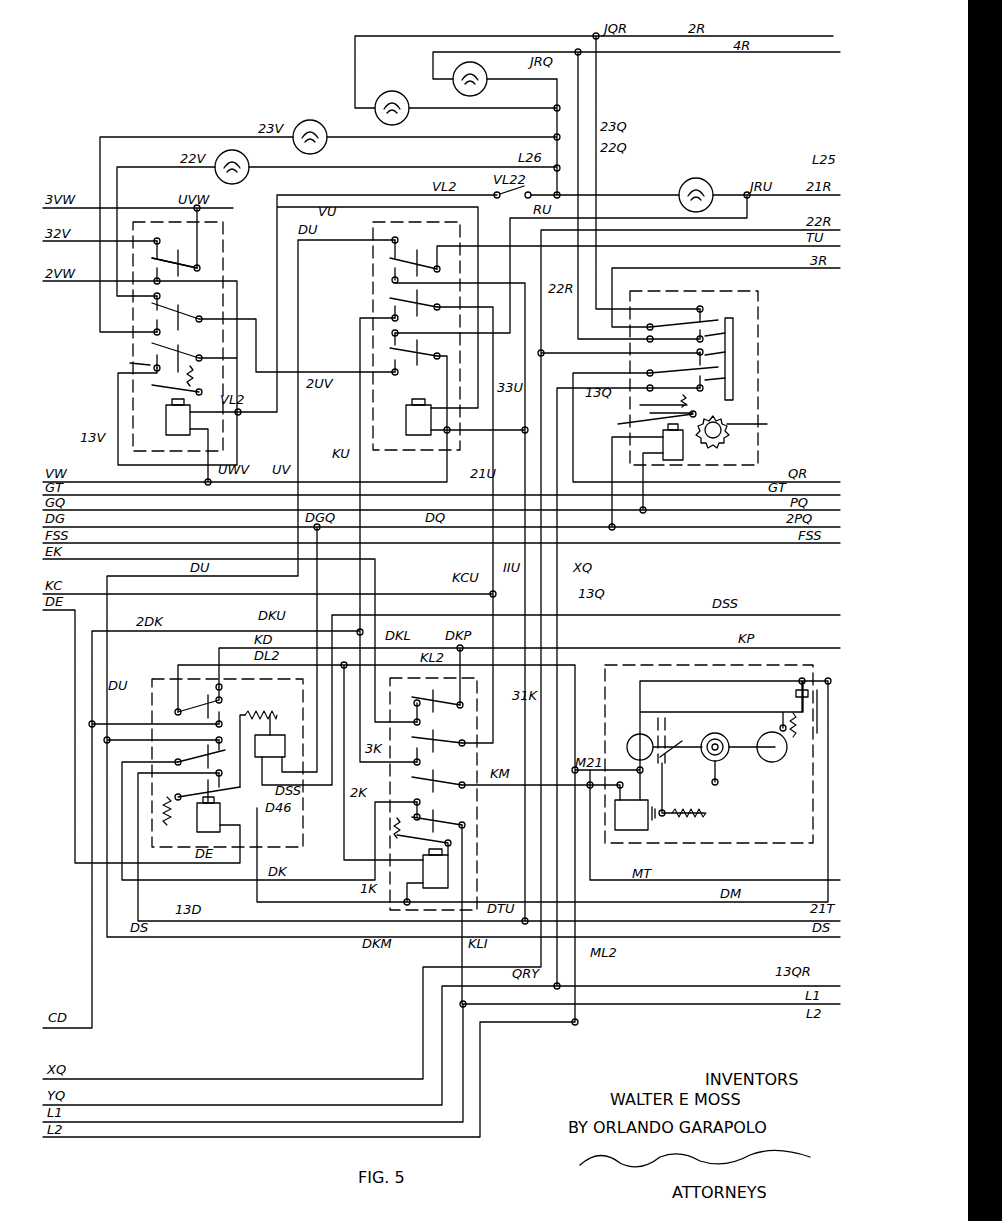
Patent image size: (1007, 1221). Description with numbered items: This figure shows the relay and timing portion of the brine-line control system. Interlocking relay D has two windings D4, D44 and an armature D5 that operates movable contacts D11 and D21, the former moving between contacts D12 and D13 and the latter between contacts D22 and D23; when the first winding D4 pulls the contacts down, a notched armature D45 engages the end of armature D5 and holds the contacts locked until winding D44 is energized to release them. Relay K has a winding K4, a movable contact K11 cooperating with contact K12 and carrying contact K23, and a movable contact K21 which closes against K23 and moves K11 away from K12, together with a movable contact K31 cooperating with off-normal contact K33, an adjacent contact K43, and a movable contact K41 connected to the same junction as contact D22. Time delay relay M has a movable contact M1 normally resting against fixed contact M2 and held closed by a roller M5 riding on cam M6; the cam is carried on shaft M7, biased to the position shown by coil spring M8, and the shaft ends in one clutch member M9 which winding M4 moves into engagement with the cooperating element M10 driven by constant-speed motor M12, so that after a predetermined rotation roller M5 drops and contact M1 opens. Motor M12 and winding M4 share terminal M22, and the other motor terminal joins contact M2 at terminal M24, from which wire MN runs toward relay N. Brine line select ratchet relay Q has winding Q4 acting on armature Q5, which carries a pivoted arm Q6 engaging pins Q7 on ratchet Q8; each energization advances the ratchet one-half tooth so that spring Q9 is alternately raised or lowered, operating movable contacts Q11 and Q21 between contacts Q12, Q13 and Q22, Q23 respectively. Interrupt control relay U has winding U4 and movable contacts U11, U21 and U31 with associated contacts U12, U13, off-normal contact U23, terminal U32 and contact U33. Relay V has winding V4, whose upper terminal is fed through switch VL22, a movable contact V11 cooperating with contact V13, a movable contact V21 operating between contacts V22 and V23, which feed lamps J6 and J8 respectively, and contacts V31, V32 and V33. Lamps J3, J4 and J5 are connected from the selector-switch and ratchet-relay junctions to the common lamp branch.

The lamp J3 is at (702, 194).
The lamp J4 is at (398, 108).
The lamp J5 is at (476, 79).
The lamp J6 is at (240, 167).
The lamp J8 is at (318, 137).
The switch VL22 is at (512, 192).
The relay V is at (223, 230).
The winding of relay V V4 is at (166, 420).
The movable contact V11 is at (181, 355).
The contact V13 is at (129, 360).
The movable contact V21 is at (181, 314).
The contact V22 is at (132, 303).
The contact V23 is at (132, 327).
The contact V31 is at (186, 259).
The contact V32 is at (174, 254).
The contact V33 is at (146, 273).
The interrupt control relay U is at (460, 232).
The winding of relay U U4 is at (406, 421).
The movable contact U11 is at (422, 351).
The contact U12 is at (390, 338).
The contact U13 is at (390, 366).
The movable contact U21 is at (418, 300).
The off-normal contact U23 is at (390, 306).
The movable contact U31 is at (413, 257).
The terminal U32 is at (390, 246).
The contact U33 is at (390, 271).
The brine line select ratchet relay Q is at (758, 455).
The winding of relay Q Q4 is at (683, 446).
The armature Q5 is at (663, 398).
The pivoted arm Q6 is at (641, 422).
The pins Q7 is at (739, 444).
The ratchet Q8 is at (741, 432).
The spring Q9 is at (731, 409).
The movable contact Q11 is at (684, 365).
The contact Q12 is at (731, 355).
The contact Q13 is at (730, 379).
The movable contact Q21 is at (684, 319).
The contact Q22 is at (716, 308).
The contact Q23 is at (730, 331).
The relay D is at (303, 838).
The first winding D4 is at (197, 827).
The armature D5 is at (232, 795).
The movable contact D11 is at (196, 756).
The contact D12 is at (201, 737).
The contact D13 is at (204, 788).
The movable contact D21 is at (198, 701).
The contact D22 is at (237, 690).
The contact D23 is at (239, 710).
The second winding D44 is at (270, 746).
The armature D45 is at (245, 723).
The relay K is at (477, 870).
The winding of relay K K4 is at (423, 871).
The movable contact K11 is at (441, 821).
The contact K12 is at (407, 800).
The movable contact K21 is at (438, 777).
The contact K23 is at (433, 805).
The movable contact K31 is at (438, 737).
The off-normal contact K33 is at (404, 753).
The movable contact K41 is at (436, 698).
The contact K43 is at (404, 712).
The time delay relay M is at (748, 846).
The movable contact M1 is at (805, 733).
The fixed contact M2 is at (836, 672).
The winding M4 is at (660, 815).
The roller M5 is at (780, 726).
The cam M6 is at (776, 762).
The shaft M7 is at (745, 750).
The coil spring M8 is at (715, 738).
The clutch member M9 is at (675, 746).
The clutch element M10 is at (678, 738).
The motor M12 is at (634, 733).
The common terminal M22 is at (664, 783).
The terminal M24 is at (796, 690).
The wire MN is at (800, 700).